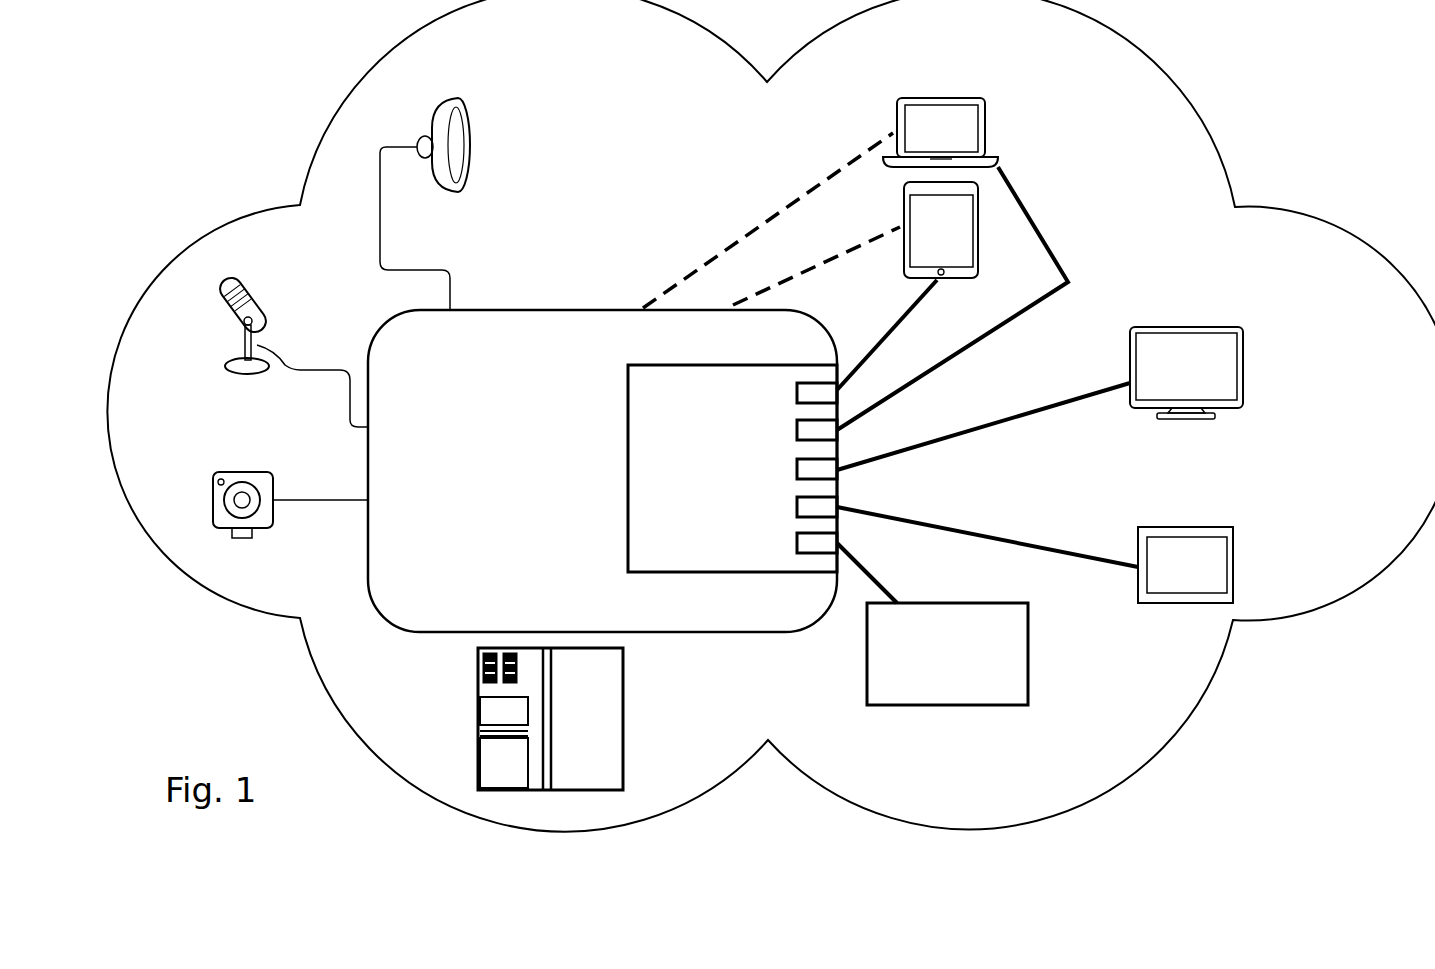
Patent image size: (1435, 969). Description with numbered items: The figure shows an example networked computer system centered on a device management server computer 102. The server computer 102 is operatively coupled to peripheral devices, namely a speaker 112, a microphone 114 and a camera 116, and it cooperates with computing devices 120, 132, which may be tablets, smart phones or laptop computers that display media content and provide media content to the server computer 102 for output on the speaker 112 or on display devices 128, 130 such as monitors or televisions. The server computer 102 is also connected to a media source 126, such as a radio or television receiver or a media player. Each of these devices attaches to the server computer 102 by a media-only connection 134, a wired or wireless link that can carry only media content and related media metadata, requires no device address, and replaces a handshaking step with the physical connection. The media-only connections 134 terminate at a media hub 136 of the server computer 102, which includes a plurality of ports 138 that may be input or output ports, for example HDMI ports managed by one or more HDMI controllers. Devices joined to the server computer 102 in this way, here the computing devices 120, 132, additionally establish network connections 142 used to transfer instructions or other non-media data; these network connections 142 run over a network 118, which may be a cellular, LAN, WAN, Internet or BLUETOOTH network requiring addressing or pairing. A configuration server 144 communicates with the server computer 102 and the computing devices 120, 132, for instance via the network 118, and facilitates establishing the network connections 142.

The device management server computer 102 is at (499, 504).
The speaker 112 is at (515, 154).
The microphone 114 is at (310, 324).
The camera 116 is at (287, 575).
The network 118 is at (677, 68).
The computing device 120 is at (1020, 242).
The media source 126 is at (930, 681).
The display device 128 is at (1283, 379).
The display device 130 is at (1277, 574).
The computing device 132 is at (1028, 136).
The media-only connection 134 is at (880, 340).
The media hub 136 is at (752, 500).
The port 138 is at (797, 430).
The network connection 142 is at (775, 200).
The configuration server 144 is at (610, 718).